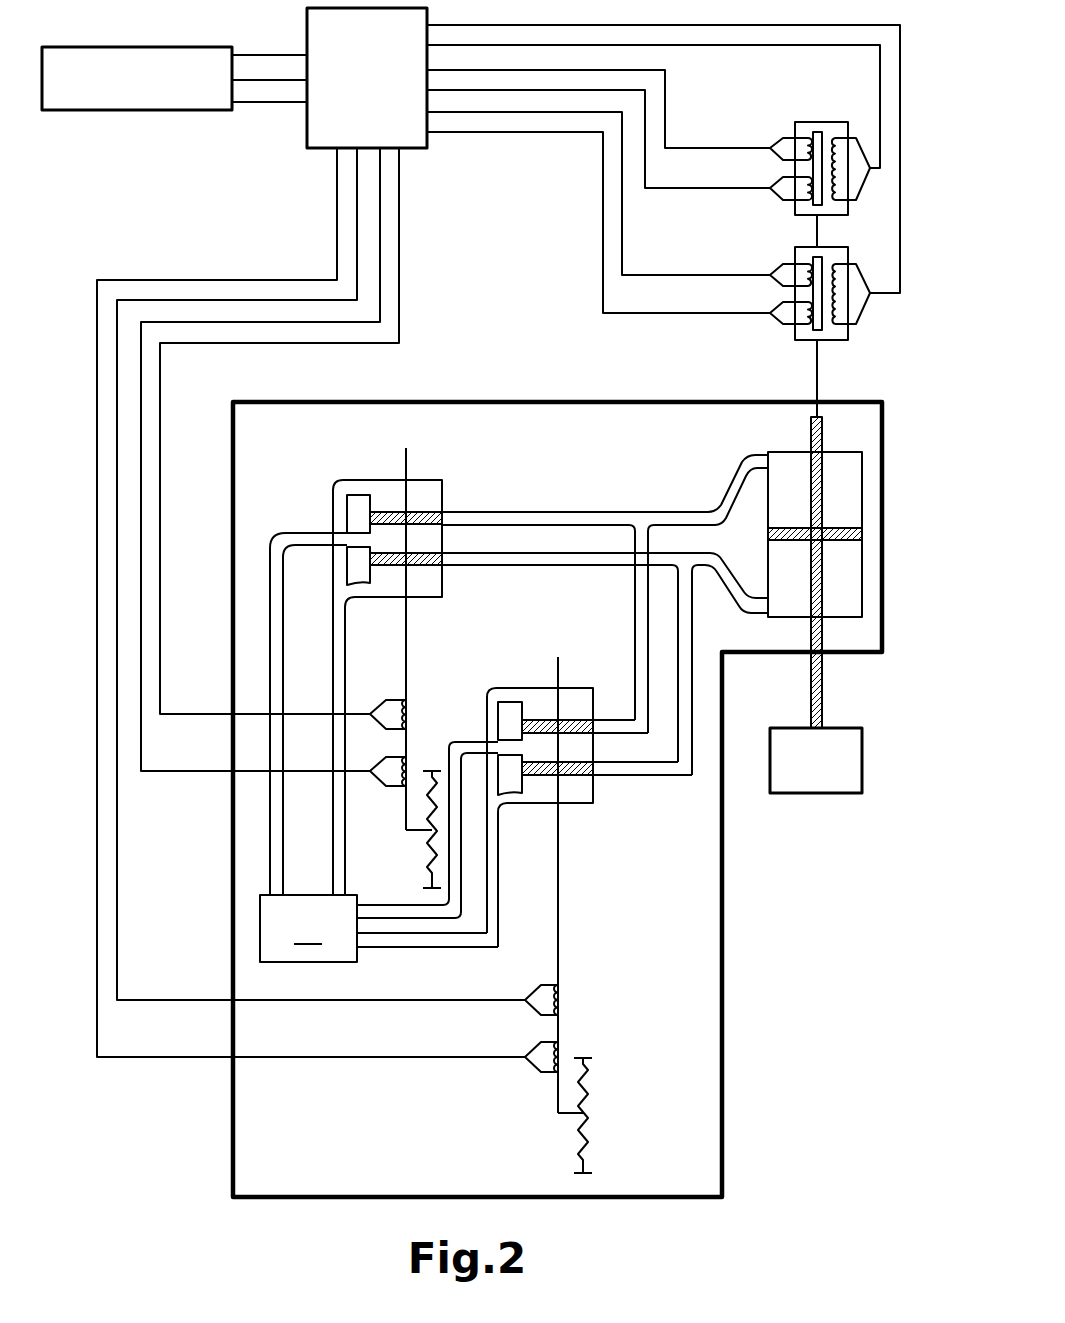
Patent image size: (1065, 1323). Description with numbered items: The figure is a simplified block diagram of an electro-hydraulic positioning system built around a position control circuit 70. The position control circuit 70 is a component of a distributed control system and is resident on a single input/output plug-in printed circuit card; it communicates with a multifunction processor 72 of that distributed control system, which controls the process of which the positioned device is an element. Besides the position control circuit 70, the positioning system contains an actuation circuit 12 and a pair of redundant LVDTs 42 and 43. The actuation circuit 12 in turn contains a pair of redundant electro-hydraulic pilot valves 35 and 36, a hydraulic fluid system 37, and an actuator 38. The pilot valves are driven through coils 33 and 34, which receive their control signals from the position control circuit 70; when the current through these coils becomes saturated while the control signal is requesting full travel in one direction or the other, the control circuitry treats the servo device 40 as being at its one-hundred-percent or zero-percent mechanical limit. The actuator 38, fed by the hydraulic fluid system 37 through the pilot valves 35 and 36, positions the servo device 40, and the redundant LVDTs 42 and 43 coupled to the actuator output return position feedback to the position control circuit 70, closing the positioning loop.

The actuation circuit 12 is at (725, 988).
The electro-hydraulic pilot valve coil 33 is at (560, 1003).
The electro-hydraulic pilot valve coil 34 is at (408, 713).
The electro-hydraulic pilot valve 35 is at (574, 700).
The electro-hydraulic pilot valve 36 is at (423, 490).
The hydraulic fluid system 37 is at (308, 928).
The actuator 38 is at (795, 452).
The servo device 40 is at (833, 728).
The LVDT 42 is at (805, 127).
The LVDT 43 is at (807, 250).
The position control circuit 70 is at (307, 123).
The multifunction processor 72 is at (152, 113).